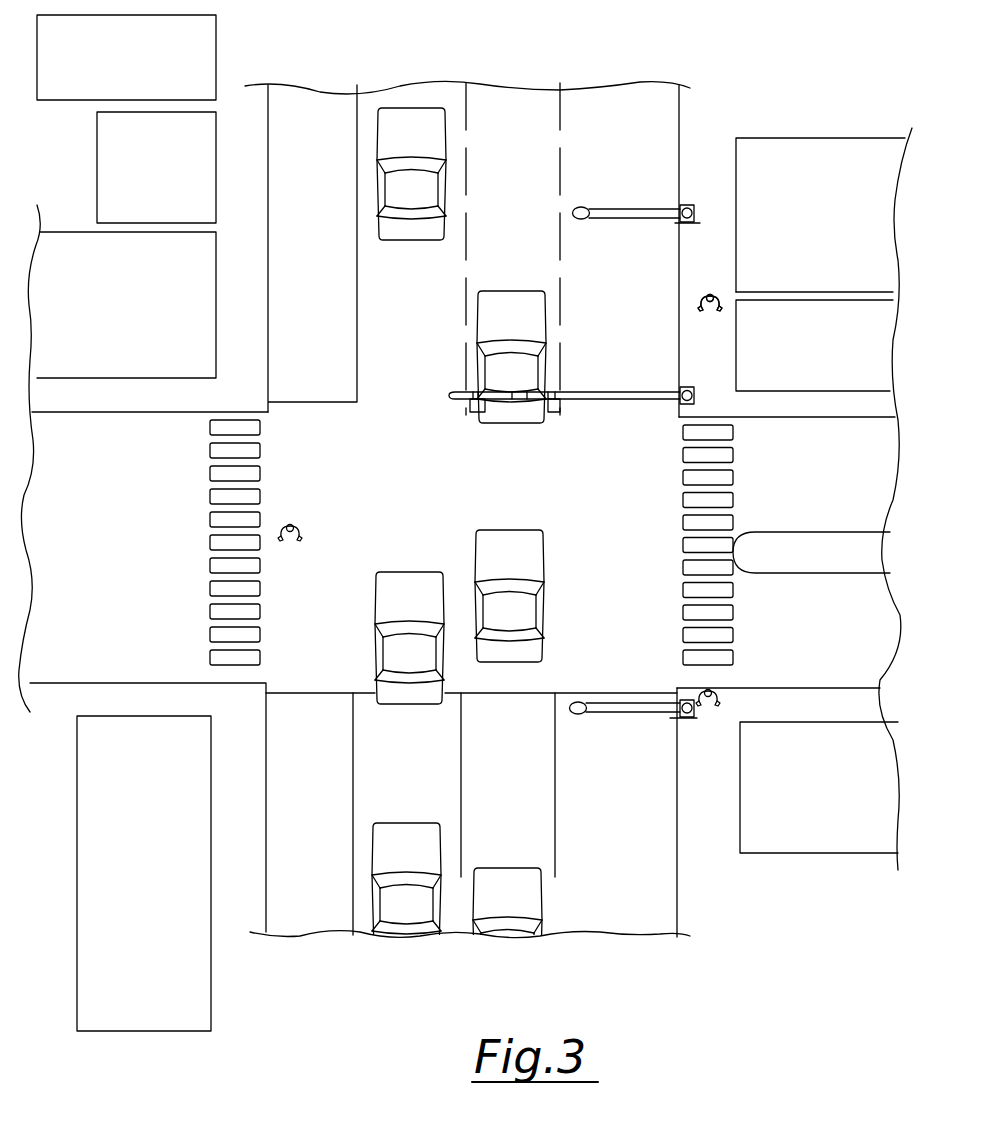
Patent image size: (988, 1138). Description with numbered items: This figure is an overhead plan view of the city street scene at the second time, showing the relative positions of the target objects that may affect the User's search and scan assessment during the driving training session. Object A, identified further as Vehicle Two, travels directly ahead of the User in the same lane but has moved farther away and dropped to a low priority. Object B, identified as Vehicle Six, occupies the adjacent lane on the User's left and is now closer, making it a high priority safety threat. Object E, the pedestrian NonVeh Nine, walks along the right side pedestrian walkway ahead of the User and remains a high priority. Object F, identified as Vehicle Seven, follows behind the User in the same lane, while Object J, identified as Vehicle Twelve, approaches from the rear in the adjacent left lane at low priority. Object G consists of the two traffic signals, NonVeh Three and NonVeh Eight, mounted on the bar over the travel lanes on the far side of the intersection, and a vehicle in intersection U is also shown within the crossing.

The Object A (Vehicle 2) A is at (516, 297).
The Object B (Vehicle 6) B is at (412, 585).
The Object E (NonVeh 9) E is at (714, 293).
The Object F (Vehicle 7) F is at (516, 933).
The Object G (NonVeh 3 and NonVeh 8) G is at (549, 410).
The Object J (Vehicle 12) J is at (391, 931).
The vehicle in intersection U is at (535, 556).